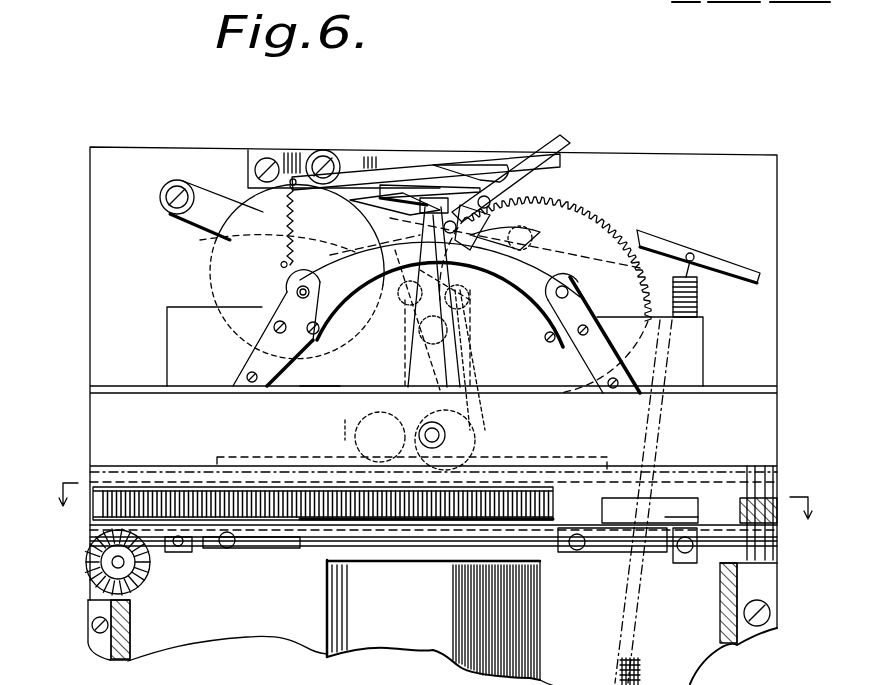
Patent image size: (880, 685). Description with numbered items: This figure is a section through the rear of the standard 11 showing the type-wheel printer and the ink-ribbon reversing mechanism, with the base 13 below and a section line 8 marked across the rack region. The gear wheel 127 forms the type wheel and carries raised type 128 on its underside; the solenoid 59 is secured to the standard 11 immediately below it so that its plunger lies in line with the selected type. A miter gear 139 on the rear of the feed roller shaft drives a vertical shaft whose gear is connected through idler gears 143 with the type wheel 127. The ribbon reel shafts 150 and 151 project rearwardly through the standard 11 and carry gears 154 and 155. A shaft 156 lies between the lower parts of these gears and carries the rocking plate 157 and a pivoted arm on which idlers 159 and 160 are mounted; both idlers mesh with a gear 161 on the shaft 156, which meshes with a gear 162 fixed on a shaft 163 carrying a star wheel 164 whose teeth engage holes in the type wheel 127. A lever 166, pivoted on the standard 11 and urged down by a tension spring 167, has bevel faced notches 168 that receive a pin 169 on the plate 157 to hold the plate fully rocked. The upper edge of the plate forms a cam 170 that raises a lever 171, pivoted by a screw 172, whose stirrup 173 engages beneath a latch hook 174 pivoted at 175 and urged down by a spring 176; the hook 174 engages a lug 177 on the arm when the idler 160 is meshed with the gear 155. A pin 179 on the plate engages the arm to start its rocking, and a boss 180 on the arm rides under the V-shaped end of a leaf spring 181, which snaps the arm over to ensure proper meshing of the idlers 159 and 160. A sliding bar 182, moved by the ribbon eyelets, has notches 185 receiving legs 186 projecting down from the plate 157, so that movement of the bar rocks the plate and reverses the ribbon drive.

The section line 8 is at (428, 510).
The standard 11 is at (90, 185).
The base 13 is at (117, 662).
The solenoid 59 is at (327, 593).
The gear wheel 127 is at (345, 505).
The raised type 128 is at (515, 523).
The miter gear 139 is at (88, 575).
The idler gears 143 is at (272, 530).
The shaft 150 is at (570, 285).
The shaft 151 is at (296, 293).
The gear 154 is at (575, 235).
The gear 155 is at (228, 305).
The shaft 156 is at (490, 395).
The rocking plate 157 is at (490, 212).
The idler 159 is at (487, 330).
The idler 160 is at (378, 292).
The gear 161 is at (335, 393).
The gear 162 is at (345, 437).
The shaft 163 is at (445, 435).
The star wheel 164 is at (490, 442).
The lever 166 is at (190, 222).
The tension spring 167 is at (700, 298).
The bevel faced notches 168 is at (470, 200).
The pin 169 is at (490, 198).
The cam 170 is at (455, 180).
The lever 171 is at (380, 172).
The screw 172 is at (324, 150).
The stirrup 173 is at (380, 150).
The latch hook 174 is at (415, 155).
The pivot 175 is at (267, 157).
The spring 176 is at (235, 256).
The lug 177 is at (520, 208).
The pin 179 is at (530, 240).
The boss 180 is at (545, 235).
The leaf spring 181 is at (428, 330).
The sliding bar 182 is at (588, 464).
The notches 185 is at (252, 452).
The legs 186 is at (342, 424).